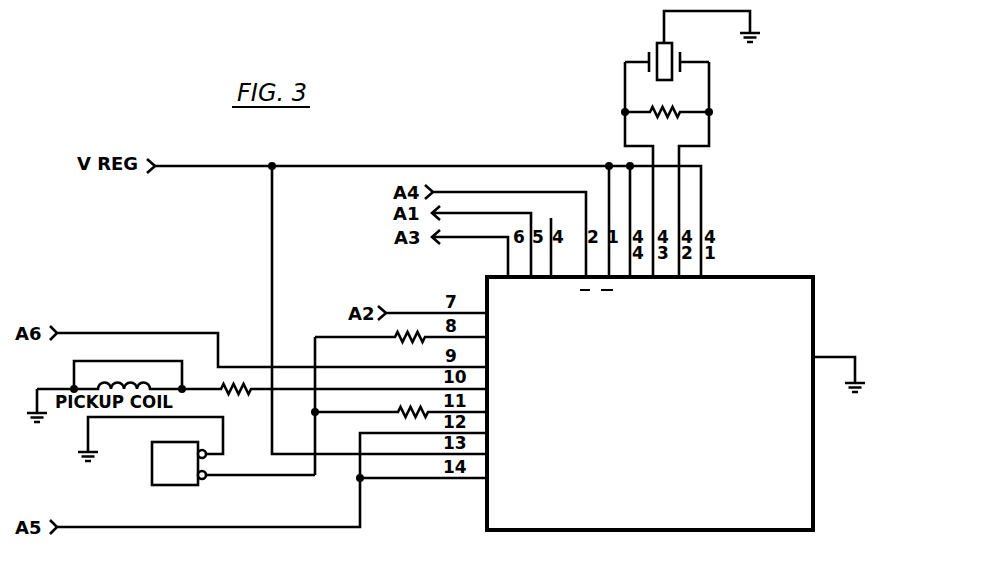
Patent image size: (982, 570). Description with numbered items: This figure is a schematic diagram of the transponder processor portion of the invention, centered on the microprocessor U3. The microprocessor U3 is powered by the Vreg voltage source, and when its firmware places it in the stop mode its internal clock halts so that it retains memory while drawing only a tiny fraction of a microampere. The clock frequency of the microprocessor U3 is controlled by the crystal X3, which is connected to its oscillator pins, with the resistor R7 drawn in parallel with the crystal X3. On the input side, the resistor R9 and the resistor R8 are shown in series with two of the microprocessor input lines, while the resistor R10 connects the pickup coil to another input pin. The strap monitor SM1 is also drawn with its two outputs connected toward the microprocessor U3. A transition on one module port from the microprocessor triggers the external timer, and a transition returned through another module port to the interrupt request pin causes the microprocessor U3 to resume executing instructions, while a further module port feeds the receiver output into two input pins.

The microprocessor U3 is at (800, 312).
The crystal X3 is at (684, 56).
The resistor across crystal R7 is at (667, 169).
The resistor on pin 11 R8 is at (401, 404).
The resistor on pin 8 R9 is at (401, 347).
The resistor between pickup coil and pin 10 R10 is at (334, 401).
The strap monitor SM1 is at (196, 465).